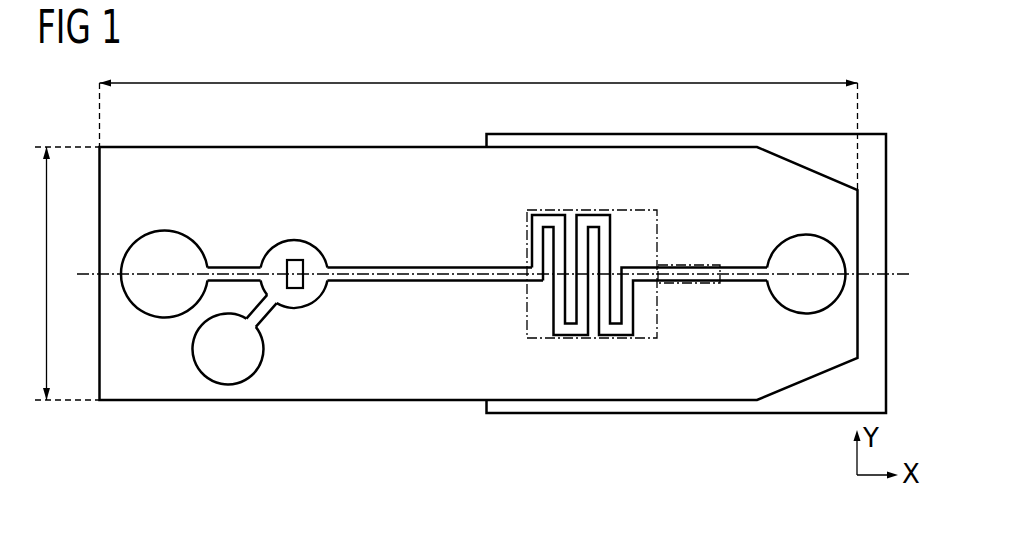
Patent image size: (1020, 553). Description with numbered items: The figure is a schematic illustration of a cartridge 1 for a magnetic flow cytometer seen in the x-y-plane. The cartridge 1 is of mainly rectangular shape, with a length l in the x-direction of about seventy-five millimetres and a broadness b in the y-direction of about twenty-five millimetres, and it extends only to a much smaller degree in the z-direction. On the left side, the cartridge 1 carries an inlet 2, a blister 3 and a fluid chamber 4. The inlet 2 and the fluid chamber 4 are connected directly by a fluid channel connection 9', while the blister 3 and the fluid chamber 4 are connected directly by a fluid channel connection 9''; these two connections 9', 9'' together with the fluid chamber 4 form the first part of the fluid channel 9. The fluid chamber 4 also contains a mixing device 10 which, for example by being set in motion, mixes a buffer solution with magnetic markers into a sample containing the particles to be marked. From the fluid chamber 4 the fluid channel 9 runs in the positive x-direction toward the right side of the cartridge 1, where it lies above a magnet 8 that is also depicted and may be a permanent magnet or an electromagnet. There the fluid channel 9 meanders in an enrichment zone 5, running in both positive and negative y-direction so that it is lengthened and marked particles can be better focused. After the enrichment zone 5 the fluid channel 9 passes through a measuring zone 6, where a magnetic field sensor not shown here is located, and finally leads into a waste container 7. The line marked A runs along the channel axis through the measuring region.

The cartridge 1 is at (287, 134).
The inlet 2 is at (165, 244).
The blister 3 is at (201, 352).
The fluid chamber 4 is at (282, 255).
The enrichment zone 5 is at (631, 202).
The measuring zone 6 is at (694, 258).
The waste container 7 is at (799, 247).
The magnet 8 is at (870, 143).
The fluid channel 9 is at (435, 246).
The fluid channel connection 9' is at (234, 236).
The fluid channel connection 9'' is at (290, 330).
The mixing device 10 is at (296, 262).
The length l is at (496, 79).
The broadness b is at (67, 273).
The section line A is at (907, 274).